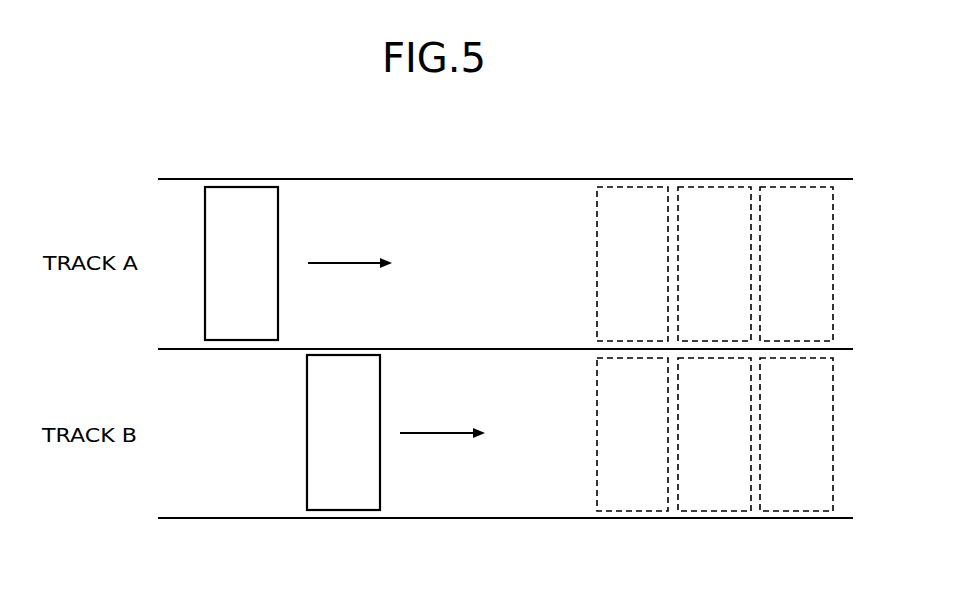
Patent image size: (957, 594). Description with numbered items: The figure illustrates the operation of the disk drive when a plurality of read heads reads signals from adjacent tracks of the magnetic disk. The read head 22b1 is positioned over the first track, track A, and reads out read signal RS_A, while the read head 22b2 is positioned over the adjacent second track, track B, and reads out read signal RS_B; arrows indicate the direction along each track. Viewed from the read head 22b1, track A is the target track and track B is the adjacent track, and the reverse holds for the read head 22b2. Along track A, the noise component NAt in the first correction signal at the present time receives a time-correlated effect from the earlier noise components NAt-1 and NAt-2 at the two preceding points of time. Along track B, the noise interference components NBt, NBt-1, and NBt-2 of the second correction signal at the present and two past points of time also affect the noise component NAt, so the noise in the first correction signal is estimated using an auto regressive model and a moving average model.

The read head 22b1 is at (238, 187).
The read head 22b2 is at (343, 511).
The noise component NAt-2 is at (632, 264).
The noise component NAt-1 is at (714, 264).
The noise component NAt is at (796, 264).
The noise interference component NBt-2 is at (632, 434).
The noise interference component NBt-1 is at (714, 434).
The noise interference component NBt is at (796, 434).